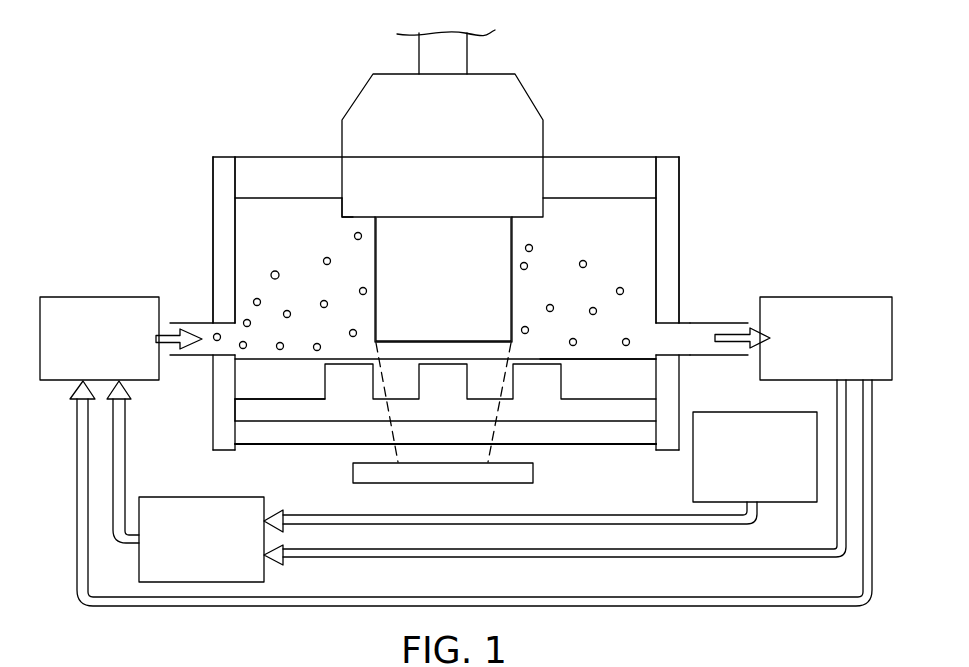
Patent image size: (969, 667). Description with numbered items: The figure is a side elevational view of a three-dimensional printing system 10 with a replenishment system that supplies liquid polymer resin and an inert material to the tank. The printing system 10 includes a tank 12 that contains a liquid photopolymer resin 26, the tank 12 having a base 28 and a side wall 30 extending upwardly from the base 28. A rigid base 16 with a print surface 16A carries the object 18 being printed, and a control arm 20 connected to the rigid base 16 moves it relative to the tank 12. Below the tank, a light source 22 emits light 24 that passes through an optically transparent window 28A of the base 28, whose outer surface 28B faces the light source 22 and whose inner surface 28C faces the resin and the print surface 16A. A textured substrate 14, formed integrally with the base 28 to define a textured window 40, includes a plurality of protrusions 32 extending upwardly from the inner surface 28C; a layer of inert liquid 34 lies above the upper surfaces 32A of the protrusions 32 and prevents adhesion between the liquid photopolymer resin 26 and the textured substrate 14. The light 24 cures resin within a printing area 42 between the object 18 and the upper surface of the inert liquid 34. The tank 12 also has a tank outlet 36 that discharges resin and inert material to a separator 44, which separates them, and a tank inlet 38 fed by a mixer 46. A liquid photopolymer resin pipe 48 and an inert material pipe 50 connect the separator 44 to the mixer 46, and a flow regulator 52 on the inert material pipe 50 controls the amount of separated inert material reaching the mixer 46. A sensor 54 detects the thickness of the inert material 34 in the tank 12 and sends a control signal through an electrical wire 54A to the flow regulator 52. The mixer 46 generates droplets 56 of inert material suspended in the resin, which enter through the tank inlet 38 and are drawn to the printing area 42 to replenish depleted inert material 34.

The 3D printing system 10 is at (116, 64).
The tank 12 is at (205, 215).
The textured substrate 14 is at (562, 383).
The rigid base 16 is at (528, 95).
The print surface 16A is at (353, 218).
The object 18 is at (512, 234).
The control arm 20 is at (412, 54).
The light source 22 is at (504, 484).
The light 24 is at (393, 437).
The liquid photopolymer resin 26 is at (625, 238).
The base 28 is at (290, 444).
The optically transparent window 28A is at (447, 445).
The outer surface 28B is at (602, 456).
The inner surface 28C is at (280, 399).
The side wall 30 is at (212, 247).
The protrusions 32 is at (344, 362).
The upper surfaces 32A is at (545, 358).
The inert liquid 34 is at (638, 358).
The tank outlet 36 is at (733, 321).
The tank inlet 38 is at (190, 322).
The textured window 40 is at (228, 415).
The printing area 42 is at (432, 352).
The separator 44 is at (849, 297).
The mixer 46 is at (83, 297).
The liquid photopolymer resin pipe 48 is at (640, 607).
The inert material pipe 50 is at (683, 558).
The flow regulator 52 is at (195, 497).
The sensor 54 is at (722, 412).
The electrical wire 54A is at (727, 524).
The droplets 56 is at (274, 270).